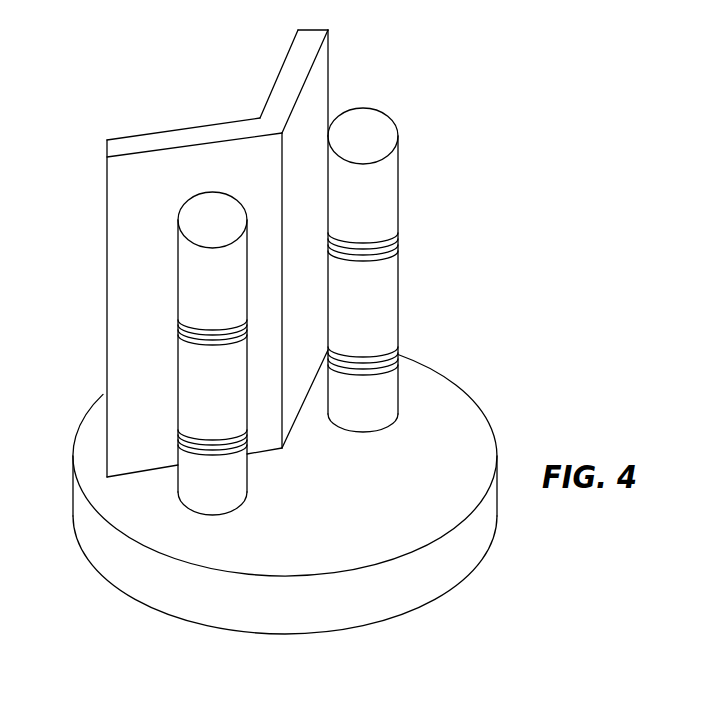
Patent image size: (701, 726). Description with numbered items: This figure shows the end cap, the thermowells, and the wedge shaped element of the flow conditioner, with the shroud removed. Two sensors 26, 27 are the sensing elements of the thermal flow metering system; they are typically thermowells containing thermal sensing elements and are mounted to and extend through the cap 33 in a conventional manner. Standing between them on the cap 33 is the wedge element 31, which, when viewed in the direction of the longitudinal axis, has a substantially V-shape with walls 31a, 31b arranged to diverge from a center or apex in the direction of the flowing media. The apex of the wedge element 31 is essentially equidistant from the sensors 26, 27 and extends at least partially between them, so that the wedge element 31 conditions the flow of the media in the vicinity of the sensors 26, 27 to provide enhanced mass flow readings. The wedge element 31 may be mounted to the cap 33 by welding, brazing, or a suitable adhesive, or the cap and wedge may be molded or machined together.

The sensor 26 is at (177, 350).
The sensor 27 is at (398, 273).
The wedge element 31 is at (217, 253).
The wall 31a is at (142, 226).
The wall 31b is at (317, 97).
The cap 33 is at (448, 400).